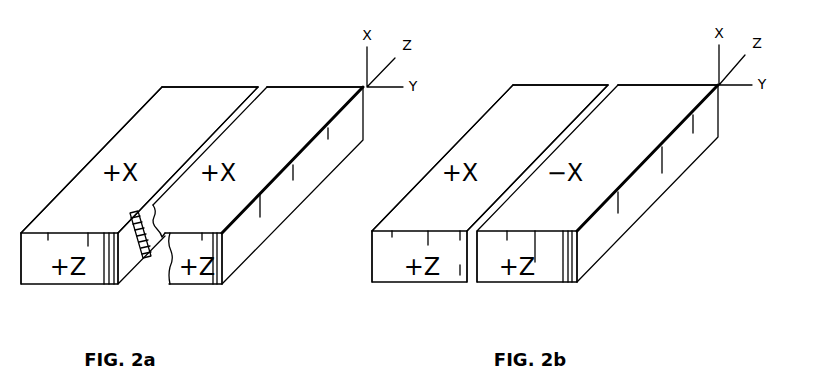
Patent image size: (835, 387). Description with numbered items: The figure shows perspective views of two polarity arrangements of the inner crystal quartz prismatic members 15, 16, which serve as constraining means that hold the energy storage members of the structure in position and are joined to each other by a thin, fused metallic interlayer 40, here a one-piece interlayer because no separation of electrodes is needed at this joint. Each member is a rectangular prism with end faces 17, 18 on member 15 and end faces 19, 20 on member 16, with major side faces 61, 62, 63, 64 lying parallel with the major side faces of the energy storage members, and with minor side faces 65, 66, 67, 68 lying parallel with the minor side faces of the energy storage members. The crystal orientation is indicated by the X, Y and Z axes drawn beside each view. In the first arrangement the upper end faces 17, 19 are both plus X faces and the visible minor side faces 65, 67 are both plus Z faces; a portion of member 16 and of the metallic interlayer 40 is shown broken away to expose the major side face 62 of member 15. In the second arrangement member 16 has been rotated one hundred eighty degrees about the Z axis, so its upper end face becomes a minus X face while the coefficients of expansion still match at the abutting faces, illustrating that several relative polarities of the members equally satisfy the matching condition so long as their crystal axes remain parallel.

In FIG. 2A, the inner crystal prismatic member 15 is at (51, 287).
In FIG. 2B, the inner crystal prismatic member 15 is at (416, 288).
In FIG. 2A, the inner crystal prismatic member 16 is at (171, 289).
In FIG. 2B, the inner crystal prismatic member 16 is at (536, 289).
In FIG. 2A, the end face 17 is at (180, 122).
In FIG. 2B, the end face 17 is at (536, 122).
In FIG. 2A, the end face 18 is at (31, 285).
In FIG. 2B, the end face 18 is at (384, 284).
In FIG. 2A, the end face 19 is at (297, 122).
In FIG. 2B, the end face 19 is at (561, 283).
In FIG. 2A, the end face 20 is at (208, 285).
In FIG. 2B, the end face 20 is at (644, 122).
In FIG. 2A, the metallic interlayer 40 is at (153, 249).
In FIG. 2B, the metallic interlayer 40 is at (469, 284).
In FIG. 2A, the major side face 61 is at (51, 201).
In FIG. 2B, the major side face 61 is at (388, 212).
In FIG. 2A, the major side face 62 is at (128, 266).
In FIG. 2A, the major side face 63 is at (201, 152).
In FIG. 2B, the major side face 63 is at (651, 192).
In FIG. 2A, the major side face 64 is at (289, 213).
In FIG. 2A, the minor side face 65 is at (43, 262).
In FIG. 2B, the minor side face 65 is at (394, 262).
In FIG. 2A, the minor side face 66 is at (200, 86).
In FIG. 2B, the minor side face 66 is at (562, 84).
In FIG. 2A, the minor side face 67 is at (177, 287).
In FIG. 2B, the minor side face 67 is at (497, 252).
In FIG. 2A, the minor side face 68 is at (282, 86).
In FIG. 2B, the minor side face 68 is at (672, 84).